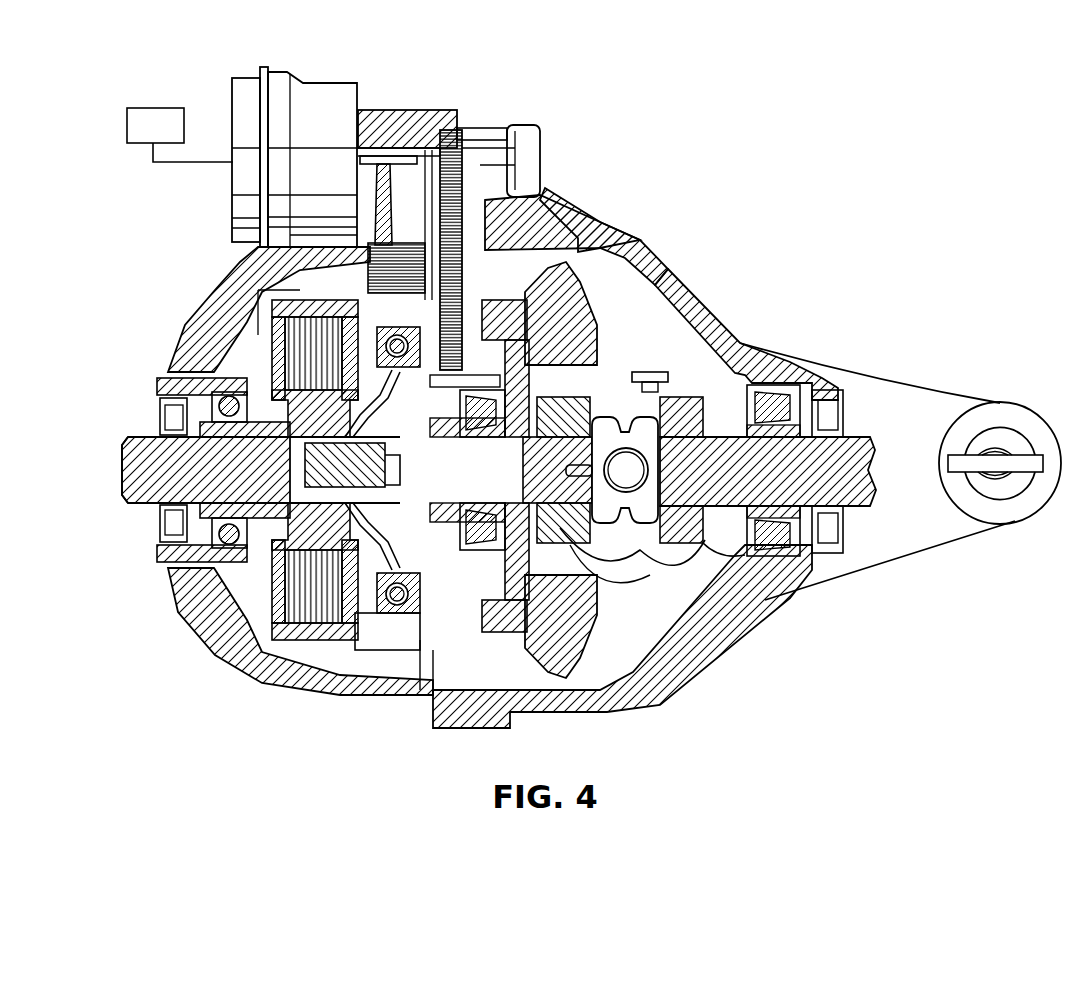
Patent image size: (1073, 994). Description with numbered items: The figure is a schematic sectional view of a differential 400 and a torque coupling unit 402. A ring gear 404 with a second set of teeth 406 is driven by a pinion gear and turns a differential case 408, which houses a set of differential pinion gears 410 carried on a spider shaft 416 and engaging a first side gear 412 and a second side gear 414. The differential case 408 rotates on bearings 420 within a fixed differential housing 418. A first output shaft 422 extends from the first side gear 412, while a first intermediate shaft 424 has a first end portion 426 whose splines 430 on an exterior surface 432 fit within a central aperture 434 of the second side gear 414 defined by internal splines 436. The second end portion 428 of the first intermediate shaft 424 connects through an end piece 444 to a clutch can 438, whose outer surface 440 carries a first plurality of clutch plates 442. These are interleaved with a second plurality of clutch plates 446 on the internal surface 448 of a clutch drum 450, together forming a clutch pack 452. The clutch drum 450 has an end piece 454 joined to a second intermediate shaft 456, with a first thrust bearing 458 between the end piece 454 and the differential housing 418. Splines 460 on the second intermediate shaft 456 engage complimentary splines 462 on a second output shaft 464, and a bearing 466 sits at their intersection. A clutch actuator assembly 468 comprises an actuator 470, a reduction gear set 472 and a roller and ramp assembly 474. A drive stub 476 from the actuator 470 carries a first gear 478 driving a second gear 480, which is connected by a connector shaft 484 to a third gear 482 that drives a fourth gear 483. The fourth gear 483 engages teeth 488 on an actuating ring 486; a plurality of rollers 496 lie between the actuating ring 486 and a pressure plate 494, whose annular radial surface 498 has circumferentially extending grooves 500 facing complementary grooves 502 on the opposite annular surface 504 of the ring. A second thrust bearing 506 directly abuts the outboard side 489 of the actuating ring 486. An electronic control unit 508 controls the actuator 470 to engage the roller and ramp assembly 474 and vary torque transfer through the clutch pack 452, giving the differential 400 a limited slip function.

The differential 400 is at (708, 186).
The torque coupling unit 402 is at (146, 289).
The ring gear 404 is at (556, 270).
The second set of teeth 406 is at (611, 248).
The differential case 408 is at (520, 560).
The set of differential pinion gears 410 is at (692, 552).
The first side gear 412 is at (688, 612).
The second side gear 414 is at (541, 652).
The spider shaft 416 is at (645, 548).
The differential housing 418 is at (697, 304).
The bearings 420 is at (772, 556).
The first output shaft 422 is at (867, 433).
The first intermediate shaft 424 is at (310, 590).
The first end portion 426 is at (603, 395).
The second end portion 428 is at (360, 553).
The set of splines 430 is at (565, 395).
The exterior surface 432 is at (745, 392).
The central aperture 434 is at (515, 632).
The internal splines 436 is at (567, 635).
The clutch can 438 is at (200, 422).
The outer surface 440 is at (300, 383).
The first plurality of clutch plates 442 is at (300, 342).
The end piece 444 is at (125, 453).
The second plurality of clutch plates 446 is at (290, 640).
The internal surface 448 is at (300, 640).
The clutch drum 450 is at (332, 640).
The clutch pack 452 is at (340, 618).
The end piece 454 is at (277, 323).
The second intermediate shaft 456 is at (215, 530).
The first thrust bearing 458 is at (305, 616).
The splines 460 is at (200, 553).
The complimentary splines 462 is at (233, 456).
The second output shaft 464 is at (130, 503).
The bearing 466 is at (225, 373).
The clutch actuator assembly 468 is at (413, 104).
The actuator 470 is at (322, 82).
The reduction gear set 472 is at (476, 133).
The roller and ramp assembly 474 is at (400, 645).
The drive stub 476 is at (462, 148).
The first gear 478 is at (480, 165).
The second gear 480 is at (463, 190).
The third gear 482 is at (410, 250).
The fourth gear 483 is at (455, 296).
The connector shaft 484 is at (463, 259).
The actuating ring 486 is at (390, 618).
The set of teeth 488 is at (258, 276).
The outboard side 489 is at (360, 565).
The pressure plate 494 is at (420, 640).
The plurality of rollers 496 is at (388, 606).
The annular radial surface 498 is at (482, 418).
The set of circumferentially extending grooves 500 is at (468, 505).
The complementary grooves 502 is at (388, 385).
The opposite annular surface 504 is at (420, 395).
The second thrust bearing 506 is at (377, 398).
The electronic control unit 508 is at (180, 135).